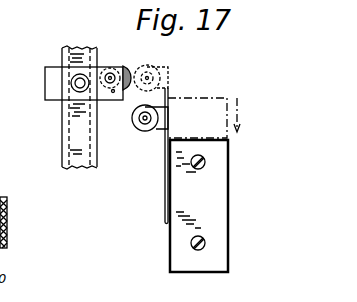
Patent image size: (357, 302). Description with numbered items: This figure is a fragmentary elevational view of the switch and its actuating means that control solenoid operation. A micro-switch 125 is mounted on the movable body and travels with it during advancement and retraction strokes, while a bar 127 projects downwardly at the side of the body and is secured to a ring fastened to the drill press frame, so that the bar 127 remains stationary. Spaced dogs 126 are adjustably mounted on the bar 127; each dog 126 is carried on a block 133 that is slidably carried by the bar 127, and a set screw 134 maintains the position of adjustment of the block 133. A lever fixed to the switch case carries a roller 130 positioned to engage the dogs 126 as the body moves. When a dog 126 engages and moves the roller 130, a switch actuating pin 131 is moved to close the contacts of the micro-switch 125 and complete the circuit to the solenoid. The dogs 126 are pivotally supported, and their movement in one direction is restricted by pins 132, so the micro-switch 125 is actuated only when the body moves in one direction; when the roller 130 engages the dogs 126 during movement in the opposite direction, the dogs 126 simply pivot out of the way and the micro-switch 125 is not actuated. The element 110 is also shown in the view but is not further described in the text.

The wall / support member 110 is at (7, 205).
The micro-switch 125 is at (178, 237).
The dogs 126 is at (133, 67).
The bar 127 is at (63, 141).
The roller 130 is at (147, 130).
The switch actuating pin 131 is at (167, 180).
The pins 132 is at (108, 100).
The blocks 133 is at (50, 89).
The set screws 134 is at (84, 78).